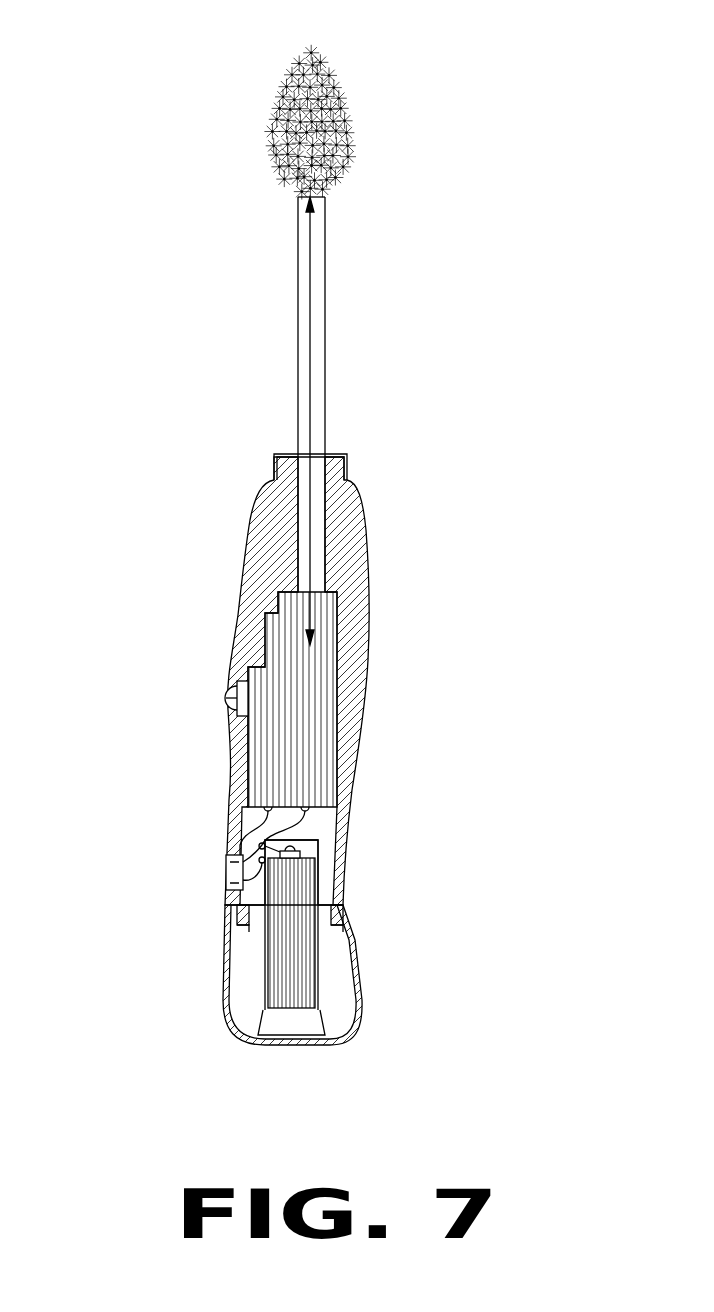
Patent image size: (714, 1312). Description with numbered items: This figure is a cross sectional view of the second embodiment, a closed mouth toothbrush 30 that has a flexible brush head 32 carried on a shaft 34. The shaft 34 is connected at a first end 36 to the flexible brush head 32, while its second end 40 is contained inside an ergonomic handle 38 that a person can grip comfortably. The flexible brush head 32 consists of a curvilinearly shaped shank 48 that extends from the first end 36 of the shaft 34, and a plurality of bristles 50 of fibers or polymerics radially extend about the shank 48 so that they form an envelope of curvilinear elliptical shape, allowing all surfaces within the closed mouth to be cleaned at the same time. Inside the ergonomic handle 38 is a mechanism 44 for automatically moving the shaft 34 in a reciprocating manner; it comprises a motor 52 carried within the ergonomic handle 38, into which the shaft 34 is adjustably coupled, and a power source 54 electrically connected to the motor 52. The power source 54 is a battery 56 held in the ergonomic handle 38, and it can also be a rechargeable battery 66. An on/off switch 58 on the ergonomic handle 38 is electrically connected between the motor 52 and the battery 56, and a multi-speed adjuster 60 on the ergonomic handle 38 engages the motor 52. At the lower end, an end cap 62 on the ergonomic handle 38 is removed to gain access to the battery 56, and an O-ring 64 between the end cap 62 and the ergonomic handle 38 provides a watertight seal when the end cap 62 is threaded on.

The closed mouth toothbrush 30 is at (148, 336).
The flexible brush head 32 is at (362, 115).
The shaft 34 is at (341, 334).
The first end 36 is at (298, 222).
The ergonomic handle 38 is at (368, 665).
The second end 40 is at (318, 580).
The mechanism 44 is at (355, 748).
The shank 48 is at (330, 155).
The plurality of bristles 50 is at (335, 87).
The motor 52 is at (275, 750).
The power source 54 is at (258, 974).
The battery 56 is at (305, 975).
The on/off switch 58 is at (238, 873).
The multi-speed adjuster 60 is at (220, 700).
The end cap 62 is at (228, 1023).
The O-ring 64 is at (345, 920).
The rechargeable battery 66 is at (305, 975).